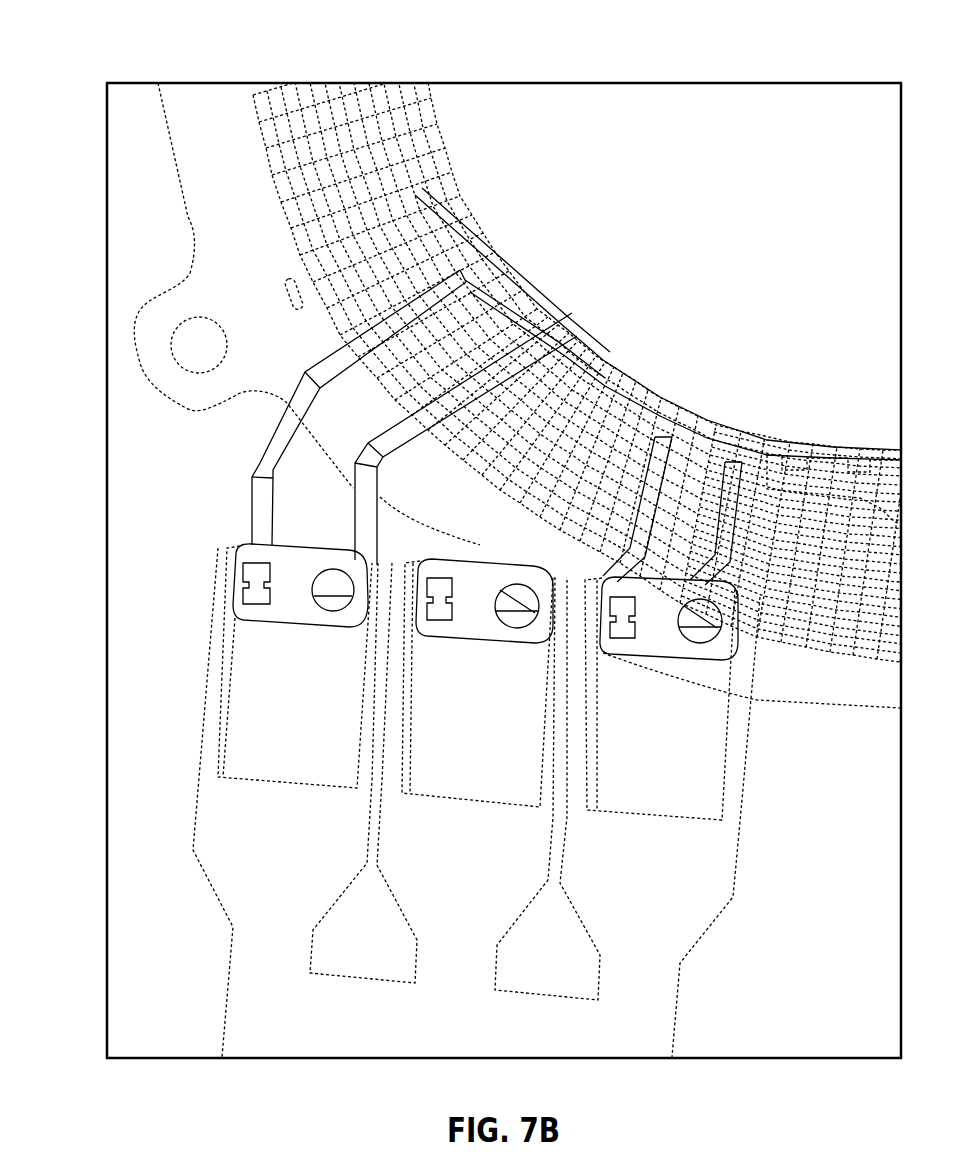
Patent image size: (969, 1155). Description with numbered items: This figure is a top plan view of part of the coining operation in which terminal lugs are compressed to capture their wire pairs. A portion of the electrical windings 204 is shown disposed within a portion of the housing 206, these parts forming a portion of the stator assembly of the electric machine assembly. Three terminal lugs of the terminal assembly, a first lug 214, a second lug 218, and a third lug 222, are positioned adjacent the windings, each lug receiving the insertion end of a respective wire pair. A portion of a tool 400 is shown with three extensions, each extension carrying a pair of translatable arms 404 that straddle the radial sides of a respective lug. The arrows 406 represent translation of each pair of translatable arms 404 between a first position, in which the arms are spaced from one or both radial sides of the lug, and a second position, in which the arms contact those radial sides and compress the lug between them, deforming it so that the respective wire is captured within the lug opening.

The electrical windings 204 is at (356, 118).
The housing 206 is at (185, 221).
The first lug 214 is at (239, 541).
The second lug 218 is at (466, 556).
The third lug 222 is at (668, 672).
The tool 400 is at (743, 889).
The translatable arms 404 is at (352, 770).
The arrows 406 is at (207, 687).